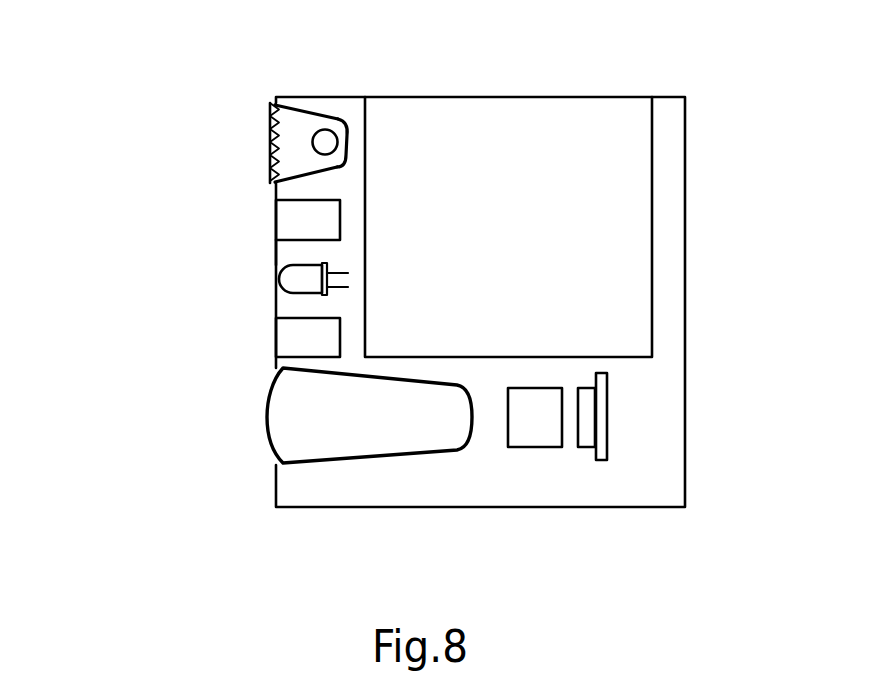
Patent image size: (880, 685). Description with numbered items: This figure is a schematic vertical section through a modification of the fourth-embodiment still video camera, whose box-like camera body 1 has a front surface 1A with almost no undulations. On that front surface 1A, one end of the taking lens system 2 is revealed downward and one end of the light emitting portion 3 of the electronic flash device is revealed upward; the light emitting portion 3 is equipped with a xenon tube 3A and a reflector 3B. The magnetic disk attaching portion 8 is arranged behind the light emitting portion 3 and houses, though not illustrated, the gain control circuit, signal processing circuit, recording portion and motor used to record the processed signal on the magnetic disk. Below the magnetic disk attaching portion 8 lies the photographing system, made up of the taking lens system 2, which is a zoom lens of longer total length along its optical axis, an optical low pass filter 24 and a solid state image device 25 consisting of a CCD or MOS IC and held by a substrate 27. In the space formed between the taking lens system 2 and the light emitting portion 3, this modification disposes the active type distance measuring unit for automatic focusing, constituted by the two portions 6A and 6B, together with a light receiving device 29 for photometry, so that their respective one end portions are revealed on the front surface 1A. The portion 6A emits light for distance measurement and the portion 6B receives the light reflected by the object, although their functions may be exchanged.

The camera body 1 is at (685, 250).
The front surface 1A is at (276, 252).
The taking lens system 2 is at (267, 420).
The light emitting portion 3 is at (206, 109).
The xenon tube 3A is at (325, 142).
The reflector 3B is at (346, 123).
The distance measuring portion 6A is at (276, 215).
The distance measuring portion 6B is at (276, 343).
The magnetic disk attaching portion 8 is at (538, 132).
The optical low pass filter 24 is at (523, 447).
The solid state image device 25 is at (583, 447).
The substrate 27 is at (602, 437).
The light receiving device 29 is at (276, 278).